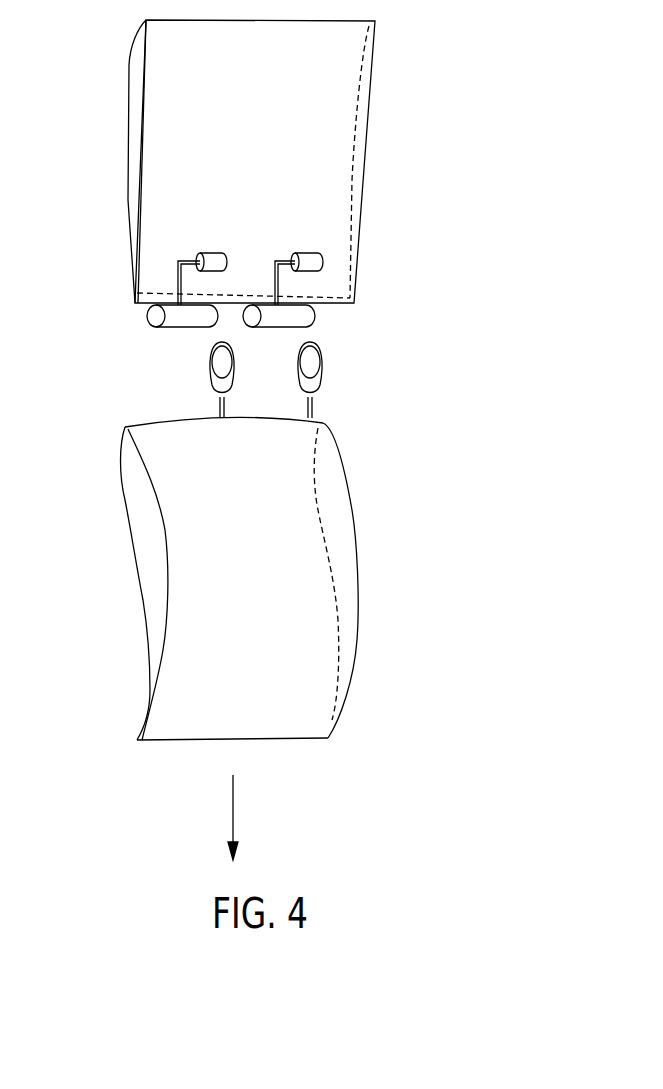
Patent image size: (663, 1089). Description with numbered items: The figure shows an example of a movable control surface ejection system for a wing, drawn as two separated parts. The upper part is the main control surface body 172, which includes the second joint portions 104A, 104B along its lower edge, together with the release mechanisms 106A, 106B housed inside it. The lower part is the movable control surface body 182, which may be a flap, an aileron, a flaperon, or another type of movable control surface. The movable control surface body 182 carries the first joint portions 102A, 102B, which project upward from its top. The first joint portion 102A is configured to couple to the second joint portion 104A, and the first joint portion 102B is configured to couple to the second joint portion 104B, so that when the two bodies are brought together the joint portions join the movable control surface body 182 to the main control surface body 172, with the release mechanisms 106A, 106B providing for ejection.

The main control surface body 172 is at (128, 190).
The release mechanism 106A is at (200, 261).
The release mechanism 106B is at (307, 262).
The second joint portion 104A is at (178, 329).
The second joint portion 104B is at (317, 314).
The first joint portion 102A is at (210, 360).
The first joint portion 102B is at (321, 372).
The movable control surface body 182 is at (180, 740).